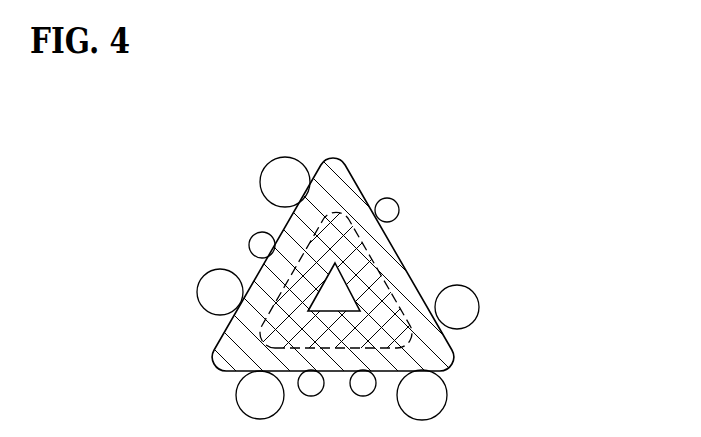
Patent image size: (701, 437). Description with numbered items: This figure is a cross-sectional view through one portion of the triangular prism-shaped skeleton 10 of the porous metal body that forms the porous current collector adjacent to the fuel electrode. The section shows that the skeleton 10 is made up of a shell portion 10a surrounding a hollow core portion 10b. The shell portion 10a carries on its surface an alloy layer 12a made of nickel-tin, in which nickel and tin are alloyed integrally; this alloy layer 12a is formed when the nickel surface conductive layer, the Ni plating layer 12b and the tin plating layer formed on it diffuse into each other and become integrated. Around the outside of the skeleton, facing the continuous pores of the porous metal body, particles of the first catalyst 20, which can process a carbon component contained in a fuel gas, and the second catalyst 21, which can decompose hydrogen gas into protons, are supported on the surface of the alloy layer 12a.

The skeleton 10 is at (310, 255).
The shell portion 10a is at (285, 255).
The core portion 10b is at (335, 293).
The alloy layer 12a is at (360, 190).
The Ni plating layer 12b is at (358, 268).
The first catalyst 20 is at (245, 243).
The second catalyst 21 is at (197, 292).